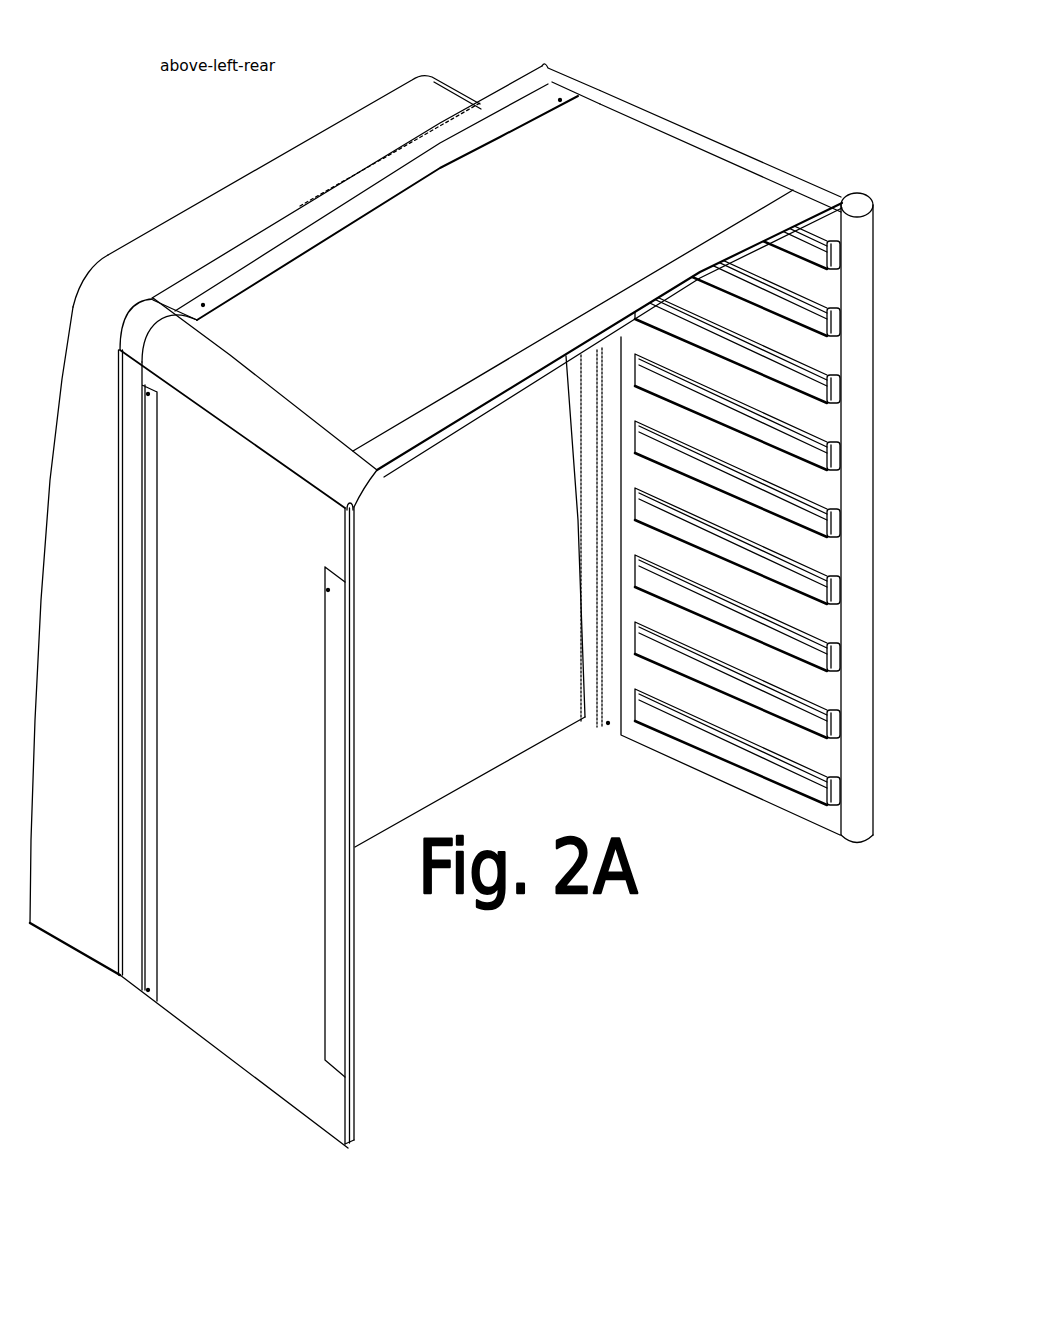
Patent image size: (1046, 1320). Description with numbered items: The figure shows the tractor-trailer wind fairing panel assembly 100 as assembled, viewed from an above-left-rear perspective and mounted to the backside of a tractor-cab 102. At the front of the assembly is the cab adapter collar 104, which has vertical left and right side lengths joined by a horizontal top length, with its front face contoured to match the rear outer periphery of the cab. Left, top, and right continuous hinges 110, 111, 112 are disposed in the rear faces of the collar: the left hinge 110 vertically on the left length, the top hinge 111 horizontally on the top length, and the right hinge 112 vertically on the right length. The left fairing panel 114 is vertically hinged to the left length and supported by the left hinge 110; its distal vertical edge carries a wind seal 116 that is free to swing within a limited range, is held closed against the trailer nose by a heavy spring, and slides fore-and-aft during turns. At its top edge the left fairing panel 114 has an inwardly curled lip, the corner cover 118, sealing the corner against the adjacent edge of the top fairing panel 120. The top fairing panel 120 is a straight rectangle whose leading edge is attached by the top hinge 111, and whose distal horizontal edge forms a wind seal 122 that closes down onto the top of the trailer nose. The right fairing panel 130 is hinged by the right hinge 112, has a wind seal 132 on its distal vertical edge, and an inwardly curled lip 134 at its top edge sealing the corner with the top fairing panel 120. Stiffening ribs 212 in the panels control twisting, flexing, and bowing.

The tractor-trailer wind fairing panel assembly 100 is at (172, 136).
The tractor-cab 102 is at (512, 585).
The cab adapter collar 104 is at (540, 67).
The left continuous hinge 110 is at (145, 527).
The top continuous hinge 111 is at (458, 151).
The right continuous hinge 112 is at (597, 518).
The left fairing panel 114 is at (285, 787).
The wind seal 116 is at (353, 993).
The corner cover 118 is at (245, 390).
The top fairing panel 120 is at (527, 271).
The wind seal 122 is at (483, 410).
The right fairing panel 130 is at (670, 768).
The wind seal 132 is at (857, 837).
The inwardly curled lip 134 is at (718, 137).
The stiffening ribs 212 is at (768, 685).